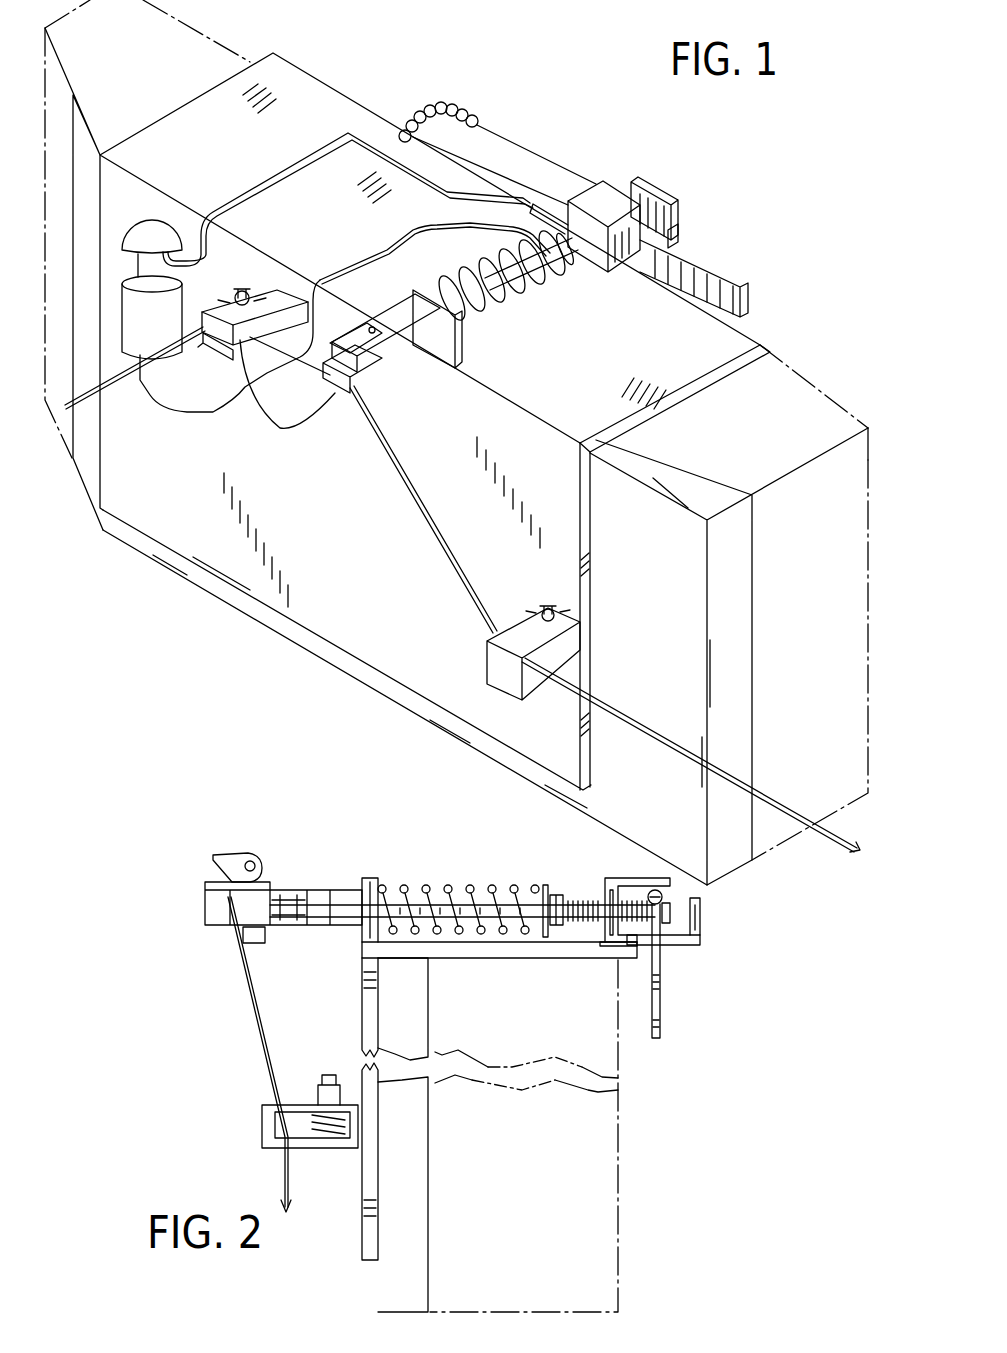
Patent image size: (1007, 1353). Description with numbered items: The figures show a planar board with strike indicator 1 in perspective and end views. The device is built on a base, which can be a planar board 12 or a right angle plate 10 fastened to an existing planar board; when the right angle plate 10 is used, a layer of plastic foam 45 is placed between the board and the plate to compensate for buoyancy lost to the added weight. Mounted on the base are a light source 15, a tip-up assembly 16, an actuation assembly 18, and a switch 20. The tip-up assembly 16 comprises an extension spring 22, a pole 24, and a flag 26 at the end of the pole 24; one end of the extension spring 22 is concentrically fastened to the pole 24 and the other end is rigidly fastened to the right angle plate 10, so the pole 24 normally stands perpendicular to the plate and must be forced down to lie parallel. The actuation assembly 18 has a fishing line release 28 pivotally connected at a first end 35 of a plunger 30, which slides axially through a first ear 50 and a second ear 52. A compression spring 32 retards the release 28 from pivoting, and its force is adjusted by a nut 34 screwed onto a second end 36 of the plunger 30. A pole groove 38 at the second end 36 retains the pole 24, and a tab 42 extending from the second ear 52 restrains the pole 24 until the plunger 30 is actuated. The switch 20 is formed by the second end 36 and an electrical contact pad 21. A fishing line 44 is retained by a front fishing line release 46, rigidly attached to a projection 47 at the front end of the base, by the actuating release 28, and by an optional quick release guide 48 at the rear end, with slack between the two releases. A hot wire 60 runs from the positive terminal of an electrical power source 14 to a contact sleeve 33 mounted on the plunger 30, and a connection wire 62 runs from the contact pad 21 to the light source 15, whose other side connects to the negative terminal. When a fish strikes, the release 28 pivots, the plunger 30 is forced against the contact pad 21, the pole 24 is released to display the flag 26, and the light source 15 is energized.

In FIG. 1, the planar board with strike indicator 1 is at (290, 688).
In FIG. 1, the right angle plate 10 is at (768, 345).
In FIG. 2, the right angle plate 10 is at (360, 1008).
In FIG. 1, the planar board 12 is at (818, 400).
In FIG. 2, the planar board 12 is at (620, 1155).
In FIG. 1, the electrical power source 14 is at (166, 341).
In FIG. 1, the light source 15 is at (157, 232).
In FIG. 1, the tip-up assembly 16 is at (510, 145).
In FIG. 1, the actuation assembly 18 is at (566, 278).
In FIG. 2, the actuation assembly 18 is at (643, 878).
In FIG. 1, the switch 20 is at (665, 195).
In FIG. 2, the switch 20 is at (700, 922).
In FIG. 1, the electrical contact pad 21 is at (685, 215).
In FIG. 2, the electrical contact pad 21 is at (703, 945).
In FIG. 1, the extension spring 22 is at (450, 110).
In FIG. 1, the pole 24 is at (552, 176).
In FIG. 1, the flag 26 is at (752, 305).
In FIG. 1, the fishing line release 28 is at (345, 410).
In FIG. 2, the fishing line release 28 is at (213, 927).
In FIG. 2, the plunger 30 is at (333, 897).
In FIG. 1, the compression spring 32 is at (478, 330).
In FIG. 2, the compression spring 32 is at (490, 887).
In FIG. 2, the contact sleeve 33 is at (543, 885).
In FIG. 2, the nut 34 is at (560, 930).
In FIG. 2, the first end 35 is at (278, 888).
In FIG. 2, the second end 36 is at (703, 900).
In FIG. 2, the pole groove 38 is at (660, 925).
In FIG. 2, the tab 42 is at (623, 878).
In FIG. 1, the fishing line 44 is at (85, 402).
In FIG. 2, the fishing line 44 is at (257, 1028).
In FIG. 1, the plastic foam 45 is at (455, 722).
In FIG. 2, the plastic foam 45 is at (383, 1280).
In FIG. 1, the front fishing line release 46 is at (228, 350).
In FIG. 1, the projection 47 is at (297, 292).
In FIG. 1, the quick release guide 48 is at (502, 680).
In FIG. 2, the quick release guide 48 is at (262, 1120).
In FIG. 2, the first ear 50 is at (377, 878).
In FIG. 2, the second ear 52 is at (610, 937).
In FIG. 1, the hot wire 60 is at (229, 405).
In FIG. 1, the connection wire 62 is at (245, 192).